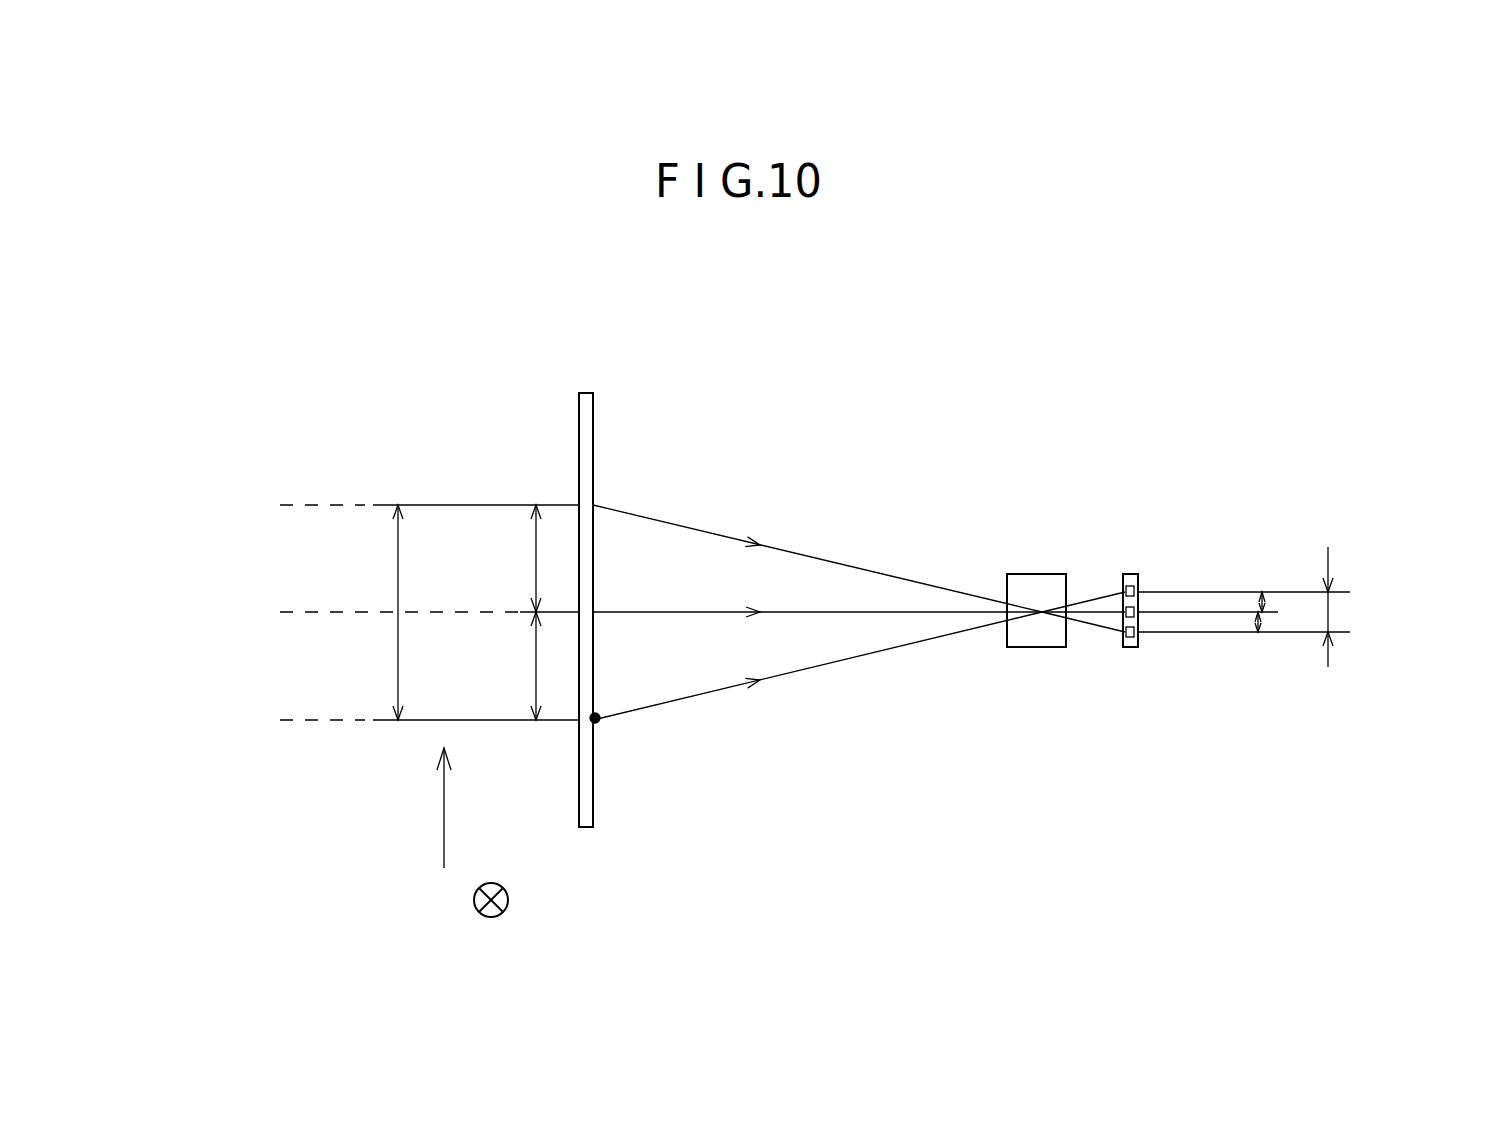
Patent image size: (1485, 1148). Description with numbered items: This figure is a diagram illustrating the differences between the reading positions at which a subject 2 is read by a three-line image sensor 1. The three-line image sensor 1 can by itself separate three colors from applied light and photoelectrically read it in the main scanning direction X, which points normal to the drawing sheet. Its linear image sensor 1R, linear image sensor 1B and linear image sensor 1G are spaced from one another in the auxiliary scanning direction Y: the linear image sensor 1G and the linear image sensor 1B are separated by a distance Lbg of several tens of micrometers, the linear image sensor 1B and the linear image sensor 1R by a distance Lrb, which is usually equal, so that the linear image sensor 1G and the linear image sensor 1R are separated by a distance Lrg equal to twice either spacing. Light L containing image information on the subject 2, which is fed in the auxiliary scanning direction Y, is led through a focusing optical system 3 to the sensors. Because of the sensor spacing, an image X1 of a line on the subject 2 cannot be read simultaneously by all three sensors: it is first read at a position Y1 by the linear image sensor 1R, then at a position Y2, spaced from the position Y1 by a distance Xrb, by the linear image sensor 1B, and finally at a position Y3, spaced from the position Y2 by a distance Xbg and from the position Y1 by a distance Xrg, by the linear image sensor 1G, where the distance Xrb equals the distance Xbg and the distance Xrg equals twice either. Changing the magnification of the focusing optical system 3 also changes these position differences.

The 3-line image sensor 1 is at (1128, 652).
The linear image sensor 1R is at (1127, 582).
The linear image sensor 1G is at (1120, 634).
The linear image sensor 1B is at (1117, 616).
The subject 2 is at (587, 393).
The focusing optical system 3 is at (1041, 574).
The light L is at (829, 559).
The image X1 is at (597, 723).
The position Y1 is at (267, 720).
The position Y2 is at (267, 612).
The position Y3 is at (267, 505).
The distance Xrg is at (397, 583).
The distance Xbg is at (536, 556).
The distance Xrb is at (536, 682).
The distance Lrb is at (1262, 590).
The distance Lbg is at (1258, 633).
The distance Lrg is at (1330, 610).
The main scanning direction X is at (508, 900).
The auxiliary scanning direction Y is at (428, 808).